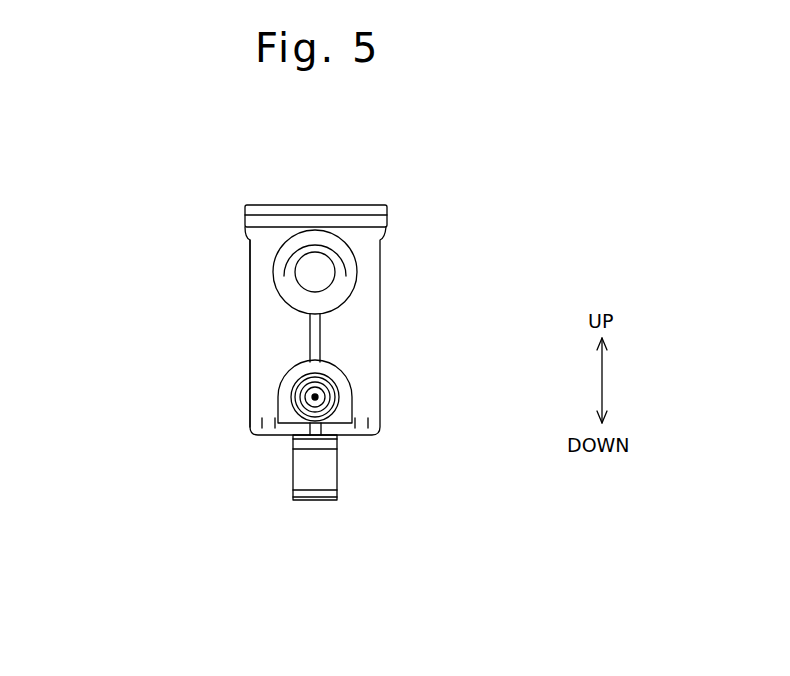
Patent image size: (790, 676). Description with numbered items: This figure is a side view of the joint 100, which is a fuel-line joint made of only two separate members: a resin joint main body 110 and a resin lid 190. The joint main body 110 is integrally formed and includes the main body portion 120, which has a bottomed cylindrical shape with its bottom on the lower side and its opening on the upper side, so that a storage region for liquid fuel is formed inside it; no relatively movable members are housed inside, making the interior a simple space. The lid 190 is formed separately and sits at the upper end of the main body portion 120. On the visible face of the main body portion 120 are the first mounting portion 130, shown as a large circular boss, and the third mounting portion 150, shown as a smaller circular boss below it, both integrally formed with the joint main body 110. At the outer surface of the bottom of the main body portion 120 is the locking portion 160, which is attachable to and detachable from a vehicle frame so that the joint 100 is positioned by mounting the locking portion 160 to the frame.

The joint 100 is at (422, 206).
The joint main body 110 is at (382, 296).
The main body portion 120 is at (250, 335).
The first mounting portion 130 is at (273, 275).
The third mounting portion 150 is at (280, 398).
The locking portion 160 is at (293, 472).
The lid 190 is at (357, 205).